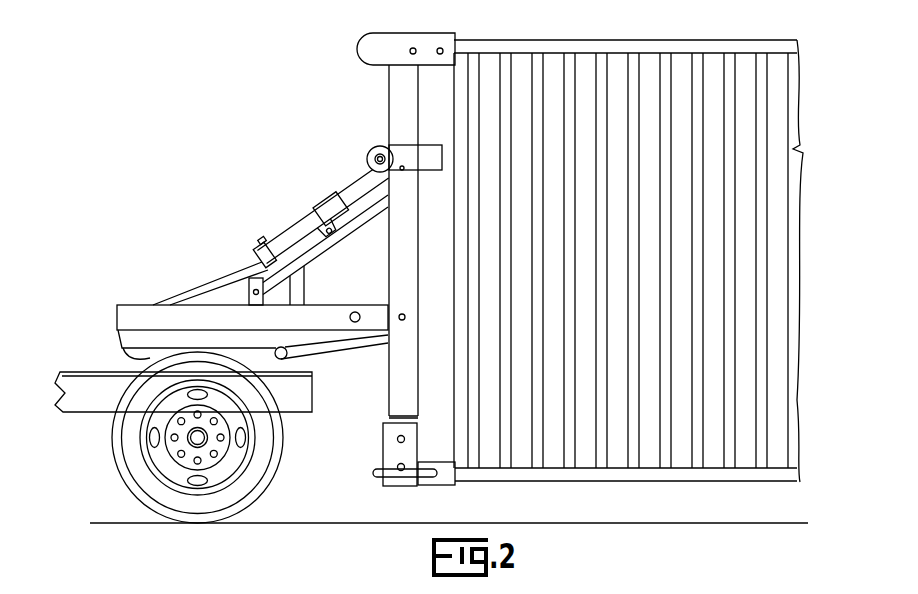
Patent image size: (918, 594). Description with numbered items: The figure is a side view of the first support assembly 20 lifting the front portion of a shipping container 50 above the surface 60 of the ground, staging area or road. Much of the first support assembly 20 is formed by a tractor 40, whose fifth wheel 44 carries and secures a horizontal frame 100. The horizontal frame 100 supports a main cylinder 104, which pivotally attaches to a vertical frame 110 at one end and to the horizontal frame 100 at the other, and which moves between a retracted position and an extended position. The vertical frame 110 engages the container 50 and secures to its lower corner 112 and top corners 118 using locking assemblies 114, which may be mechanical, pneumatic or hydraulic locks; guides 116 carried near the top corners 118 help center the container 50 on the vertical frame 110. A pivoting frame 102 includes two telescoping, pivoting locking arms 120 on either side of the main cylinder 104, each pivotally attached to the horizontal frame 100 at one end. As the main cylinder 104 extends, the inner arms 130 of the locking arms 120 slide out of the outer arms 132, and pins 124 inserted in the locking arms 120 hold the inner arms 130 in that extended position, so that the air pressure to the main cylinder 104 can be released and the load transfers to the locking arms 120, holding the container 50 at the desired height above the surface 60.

The first support assembly 20 is at (93, 287).
The tractor 40 is at (88, 413).
The fifth wheel 44 is at (123, 355).
The shipping container 50 is at (548, 38).
The surface 60 is at (120, 523).
The horizontal frame 100 is at (122, 338).
The pivoting frame 102 is at (137, 303).
The main cylinder 104 is at (322, 216).
The vertical frame 110 is at (388, 345).
The lower corner 112 is at (438, 487).
The locking assemblies 114 is at (377, 37).
The guides 116 is at (392, 147).
The top corners 118 is at (395, 80).
The locking arms 120 is at (325, 249).
The pins 124 is at (285, 213).
The inner arms 130 is at (358, 207).
The outer arms 132 is at (315, 257).